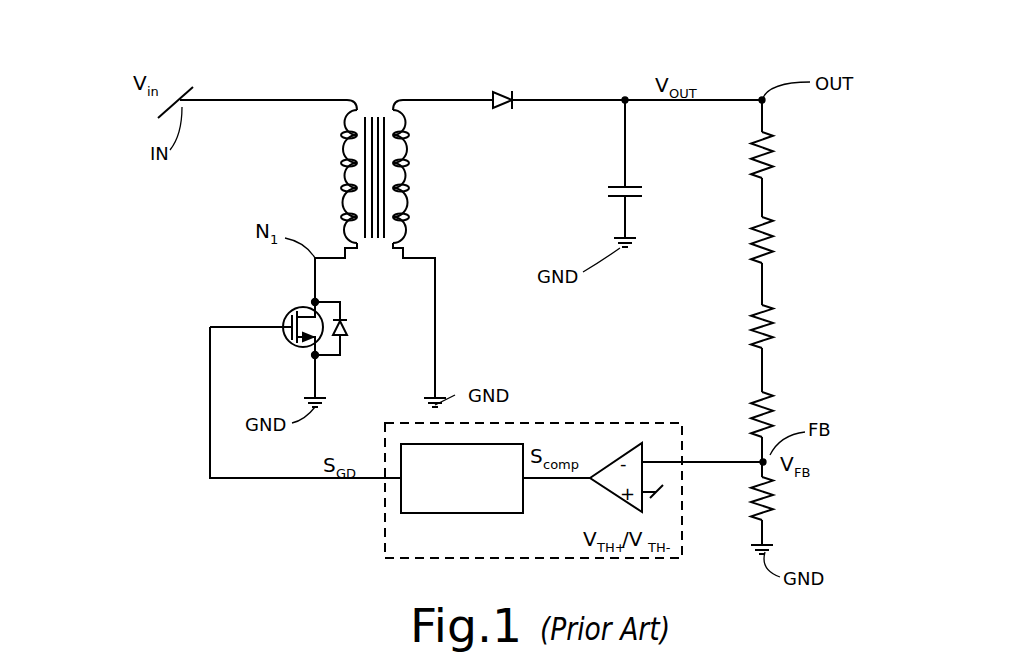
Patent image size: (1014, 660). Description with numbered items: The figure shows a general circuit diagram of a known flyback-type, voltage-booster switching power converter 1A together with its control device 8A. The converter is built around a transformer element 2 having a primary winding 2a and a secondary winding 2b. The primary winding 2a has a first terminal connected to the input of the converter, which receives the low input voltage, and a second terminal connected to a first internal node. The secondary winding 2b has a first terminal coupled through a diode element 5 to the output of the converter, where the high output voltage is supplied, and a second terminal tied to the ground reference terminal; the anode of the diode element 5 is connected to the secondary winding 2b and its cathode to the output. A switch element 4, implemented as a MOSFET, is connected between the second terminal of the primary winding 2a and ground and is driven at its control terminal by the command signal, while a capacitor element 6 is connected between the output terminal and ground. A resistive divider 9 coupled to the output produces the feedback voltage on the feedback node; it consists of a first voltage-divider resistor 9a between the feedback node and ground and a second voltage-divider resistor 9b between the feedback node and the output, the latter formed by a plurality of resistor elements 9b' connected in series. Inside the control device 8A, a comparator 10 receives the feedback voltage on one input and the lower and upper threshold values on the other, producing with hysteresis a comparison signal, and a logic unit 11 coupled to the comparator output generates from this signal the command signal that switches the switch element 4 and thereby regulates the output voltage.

The power converter 1A is at (98, 135).
The transformer element 2 is at (372, 108).
The primary winding 2a is at (345, 167).
The secondary winding 2b is at (405, 187).
The switch element 4 is at (292, 345).
The diode element 5 is at (497, 88).
The capacitor element 6 is at (608, 186).
The control device 8A is at (408, 563).
The resistive divider 9 is at (726, 356).
The first voltage-divider resistor 9a is at (775, 510).
The second voltage-divider resistor 9b is at (820, 285).
The resistor elements 9b' is at (811, 285).
The comparator 10 is at (608, 462).
The logic unit 11 is at (482, 509).